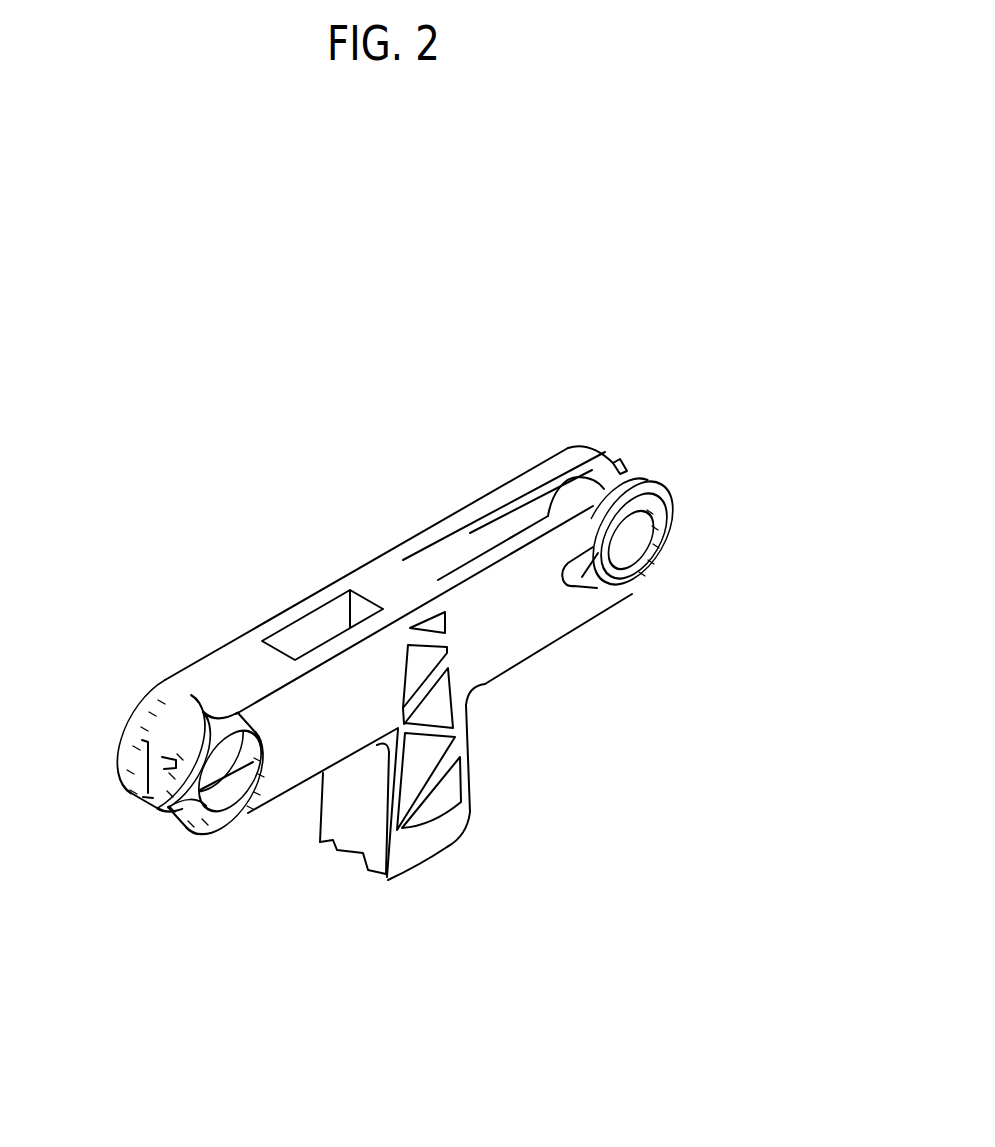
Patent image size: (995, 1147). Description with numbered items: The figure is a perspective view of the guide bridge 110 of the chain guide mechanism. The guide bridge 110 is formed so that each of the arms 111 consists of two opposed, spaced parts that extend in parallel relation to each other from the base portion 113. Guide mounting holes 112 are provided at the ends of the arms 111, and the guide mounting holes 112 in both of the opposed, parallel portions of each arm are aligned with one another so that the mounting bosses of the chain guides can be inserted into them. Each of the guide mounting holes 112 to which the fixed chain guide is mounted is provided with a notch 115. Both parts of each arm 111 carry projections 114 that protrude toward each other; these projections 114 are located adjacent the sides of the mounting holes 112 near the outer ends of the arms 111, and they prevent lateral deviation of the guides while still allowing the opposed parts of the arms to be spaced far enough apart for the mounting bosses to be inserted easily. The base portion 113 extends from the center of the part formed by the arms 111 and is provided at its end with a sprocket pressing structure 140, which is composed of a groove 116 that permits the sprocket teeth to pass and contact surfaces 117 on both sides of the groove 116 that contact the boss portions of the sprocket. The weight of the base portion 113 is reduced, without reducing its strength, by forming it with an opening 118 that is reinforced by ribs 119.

The guide bridge 110 is at (673, 366).
The arms 111 is at (509, 546).
The guide mounting holes 112 is at (188, 706).
The base portion 113 is at (388, 582).
The projections 114 is at (162, 792).
The notch 115 is at (578, 588).
The groove 116 is at (362, 852).
The contact surfaces 117 is at (323, 842).
The opening 118 is at (423, 746).
The ribs 119 is at (437, 778).
The sprocket pressing structure 140 is at (396, 956).